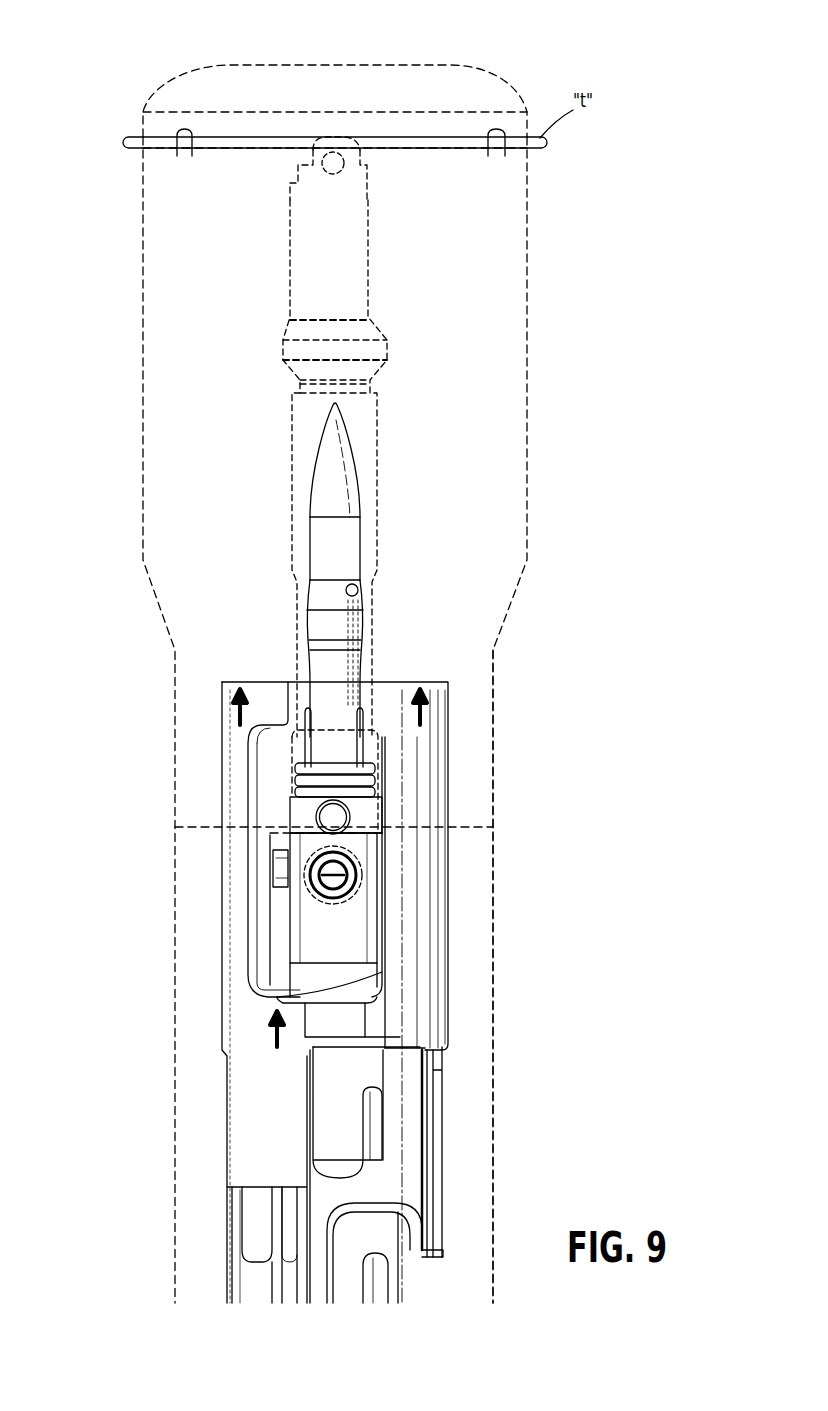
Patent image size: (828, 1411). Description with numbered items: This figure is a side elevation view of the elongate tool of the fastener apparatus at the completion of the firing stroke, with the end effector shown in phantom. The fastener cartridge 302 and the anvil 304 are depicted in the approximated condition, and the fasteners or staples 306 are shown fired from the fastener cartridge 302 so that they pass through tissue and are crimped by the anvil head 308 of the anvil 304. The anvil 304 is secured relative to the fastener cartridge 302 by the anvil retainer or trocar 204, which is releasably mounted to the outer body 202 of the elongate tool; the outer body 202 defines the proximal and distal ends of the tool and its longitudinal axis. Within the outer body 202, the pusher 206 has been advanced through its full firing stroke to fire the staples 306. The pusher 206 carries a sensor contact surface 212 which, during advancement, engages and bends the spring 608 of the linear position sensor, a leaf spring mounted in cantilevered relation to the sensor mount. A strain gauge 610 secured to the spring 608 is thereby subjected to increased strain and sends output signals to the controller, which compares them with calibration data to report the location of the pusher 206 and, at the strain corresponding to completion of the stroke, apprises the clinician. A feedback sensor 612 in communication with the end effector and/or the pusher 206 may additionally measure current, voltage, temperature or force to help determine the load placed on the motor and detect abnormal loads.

The anvil 304 is at (331, 110).
The anvil head 308 is at (352, 78).
The fasteners or staples 306 is at (177, 150).
The fastener cartridge 302 is at (515, 315).
The outer body 202 is at (493, 913).
The anvil retainer or trocar 204 is at (335, 547).
The pusher 206 is at (420, 865).
The feedback sensor 612 is at (335, 816).
The strain gauge 610 is at (343, 987).
The spring 608 is at (310, 987).
The sensor contact surface 212 is at (318, 1005).